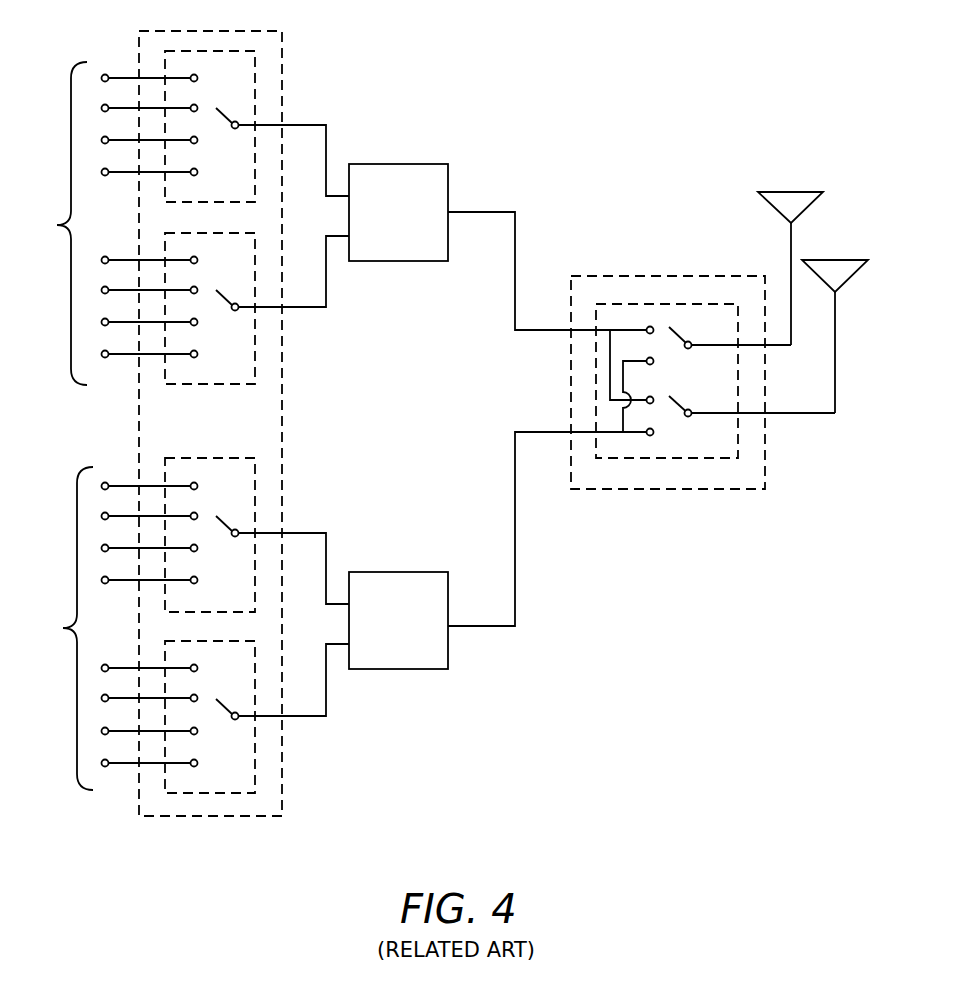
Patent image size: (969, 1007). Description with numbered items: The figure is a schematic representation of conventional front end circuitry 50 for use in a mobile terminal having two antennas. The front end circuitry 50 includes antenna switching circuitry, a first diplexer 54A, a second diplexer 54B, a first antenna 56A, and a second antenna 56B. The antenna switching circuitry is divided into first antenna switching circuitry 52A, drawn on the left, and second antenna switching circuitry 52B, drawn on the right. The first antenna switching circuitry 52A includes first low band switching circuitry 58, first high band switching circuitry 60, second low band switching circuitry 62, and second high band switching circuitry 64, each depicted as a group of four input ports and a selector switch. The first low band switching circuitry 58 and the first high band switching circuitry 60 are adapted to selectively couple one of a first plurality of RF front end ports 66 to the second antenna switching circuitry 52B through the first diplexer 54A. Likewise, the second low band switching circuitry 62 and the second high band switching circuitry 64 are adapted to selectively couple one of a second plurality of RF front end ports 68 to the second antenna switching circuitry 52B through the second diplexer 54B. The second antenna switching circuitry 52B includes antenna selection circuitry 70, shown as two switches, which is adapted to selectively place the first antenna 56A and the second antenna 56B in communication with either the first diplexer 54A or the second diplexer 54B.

The front end circuitry 50 is at (502, 52).
The first antenna switching circuitry 52A is at (192, 816).
The second antenna switching circuitry 52B is at (668, 382).
The first diplexer 54A is at (383, 261).
The second diplexer 54B is at (383, 669).
The first antenna 56A is at (791, 192).
The second antenna 56B is at (835, 260).
The first low band switching circuitry 58 is at (226, 126).
The first high band switching circuitry 60 is at (226, 308).
The second low band switching circuitry 62 is at (226, 535).
The second high band switching circuitry 64 is at (226, 717).
The first plurality of RF front end ports 66 is at (56, 223).
The second plurality of RF front end ports 68 is at (59, 628).
The antenna selection circuitry 70 is at (667, 381).